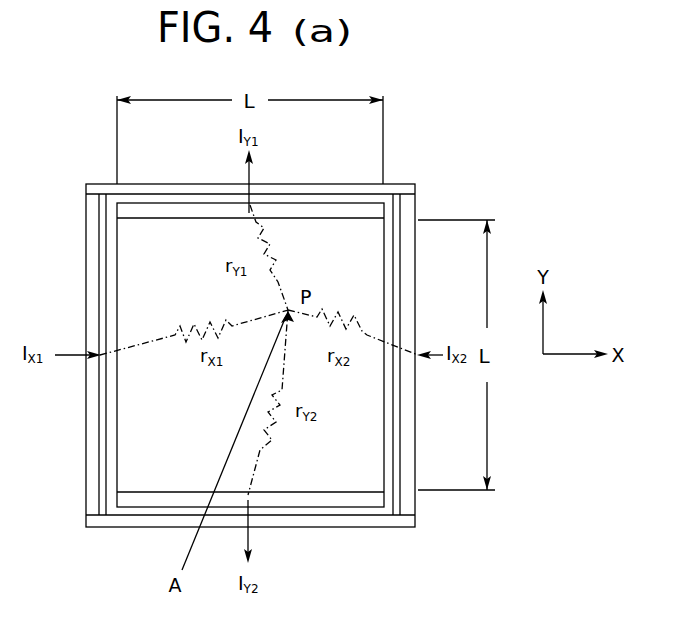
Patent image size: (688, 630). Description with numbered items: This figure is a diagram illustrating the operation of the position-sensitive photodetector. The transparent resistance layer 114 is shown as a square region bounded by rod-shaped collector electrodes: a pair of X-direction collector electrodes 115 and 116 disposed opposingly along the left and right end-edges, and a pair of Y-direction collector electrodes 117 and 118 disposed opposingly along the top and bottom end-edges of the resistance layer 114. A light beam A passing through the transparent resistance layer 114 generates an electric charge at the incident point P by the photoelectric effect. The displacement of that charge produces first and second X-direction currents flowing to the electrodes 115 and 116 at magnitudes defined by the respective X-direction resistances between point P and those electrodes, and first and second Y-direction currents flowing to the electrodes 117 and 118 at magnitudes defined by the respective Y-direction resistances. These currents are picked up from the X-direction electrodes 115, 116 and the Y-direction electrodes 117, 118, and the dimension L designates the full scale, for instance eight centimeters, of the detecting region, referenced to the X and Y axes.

The resistance layer 114 is at (150, 226).
The X-direction collector electrode 115 is at (99, 258).
The X-direction collector electrode 116 is at (407, 258).
The Y-direction collector electrode 117 is at (303, 212).
The Y-direction collector electrode 118 is at (320, 497).